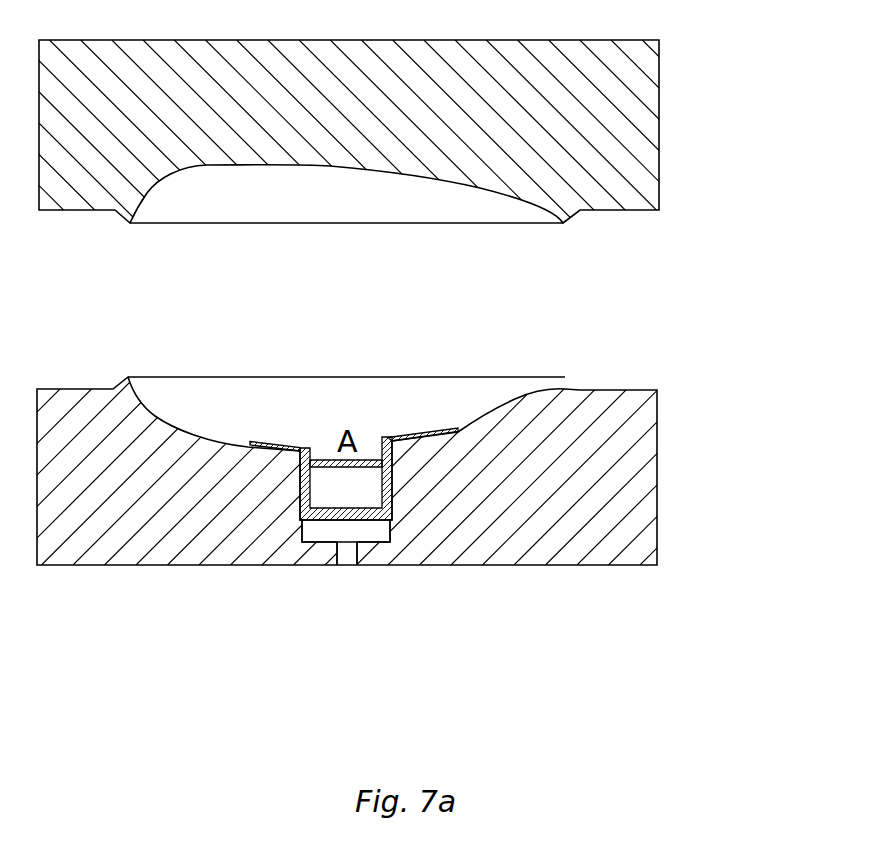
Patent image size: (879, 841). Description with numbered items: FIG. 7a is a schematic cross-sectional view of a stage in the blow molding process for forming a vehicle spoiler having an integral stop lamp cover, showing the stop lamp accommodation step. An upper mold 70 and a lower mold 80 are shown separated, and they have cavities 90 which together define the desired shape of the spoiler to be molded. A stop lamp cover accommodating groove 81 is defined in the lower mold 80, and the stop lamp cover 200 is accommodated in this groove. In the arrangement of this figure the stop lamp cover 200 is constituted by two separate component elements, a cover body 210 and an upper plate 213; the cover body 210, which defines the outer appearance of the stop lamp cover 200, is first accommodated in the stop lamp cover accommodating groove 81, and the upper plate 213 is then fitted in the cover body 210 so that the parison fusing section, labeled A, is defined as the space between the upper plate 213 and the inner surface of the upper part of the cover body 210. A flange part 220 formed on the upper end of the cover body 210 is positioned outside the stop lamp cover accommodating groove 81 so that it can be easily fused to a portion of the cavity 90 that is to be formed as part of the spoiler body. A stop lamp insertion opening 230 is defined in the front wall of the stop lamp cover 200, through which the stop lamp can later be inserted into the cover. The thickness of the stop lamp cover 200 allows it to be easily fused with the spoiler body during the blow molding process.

The upper mold 70 is at (640, 124).
The lower mold 80 is at (655, 482).
The stop lamp cover accommodating groove 81 is at (358, 524).
The cavity 90 is at (511, 222).
The stop lamp cover 200 is at (311, 525).
The cover body 210 is at (392, 506).
The upper plate 213 is at (323, 458).
The flange part 220 is at (418, 434).
The stop lamp insertion opening 230 is at (303, 480).